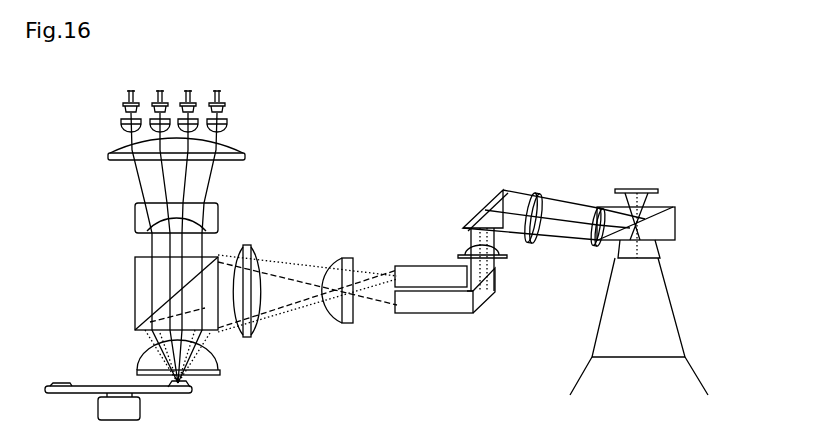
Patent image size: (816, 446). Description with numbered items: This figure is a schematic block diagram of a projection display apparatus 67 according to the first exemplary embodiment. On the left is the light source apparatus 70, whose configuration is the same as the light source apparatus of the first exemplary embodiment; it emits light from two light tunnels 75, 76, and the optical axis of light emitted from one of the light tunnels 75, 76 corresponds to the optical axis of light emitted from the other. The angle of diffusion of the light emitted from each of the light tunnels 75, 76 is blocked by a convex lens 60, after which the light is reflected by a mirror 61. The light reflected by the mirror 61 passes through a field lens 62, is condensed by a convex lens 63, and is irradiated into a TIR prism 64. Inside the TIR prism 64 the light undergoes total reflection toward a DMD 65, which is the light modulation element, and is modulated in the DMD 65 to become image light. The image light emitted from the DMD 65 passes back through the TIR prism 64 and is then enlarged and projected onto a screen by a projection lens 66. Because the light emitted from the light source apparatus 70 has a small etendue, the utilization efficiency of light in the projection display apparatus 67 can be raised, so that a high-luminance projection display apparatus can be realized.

The convex lens 60 is at (467, 248).
The mirror 61 is at (473, 207).
The field lens 62 is at (507, 188).
The convex lens 63 is at (574, 198).
The TIR prism 64 is at (660, 228).
The DMD 65 is at (638, 191).
The projection lens 66 is at (662, 315).
The projection display apparatus 67 is at (612, 131).
The light source apparatus 70 is at (290, 135).
The light tunnel 75 is at (415, 273).
The light tunnel 76 is at (430, 307).